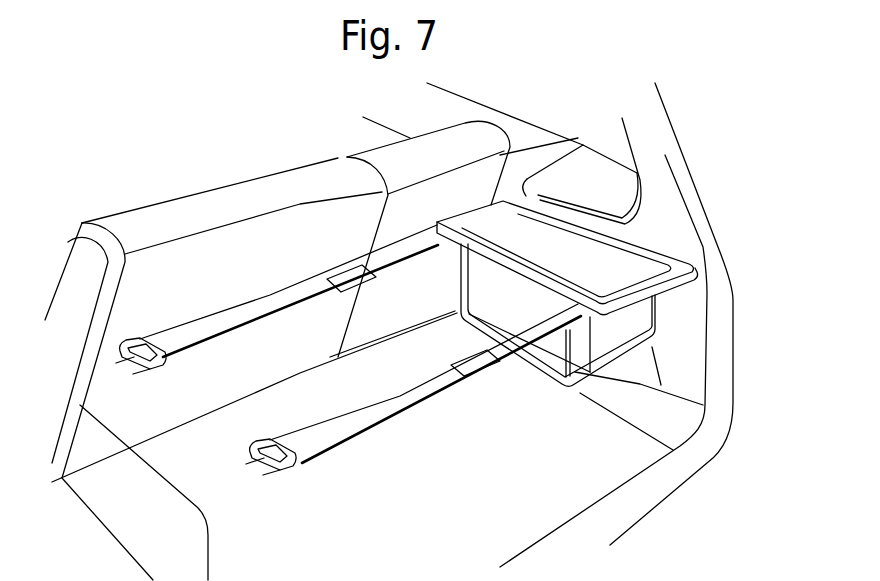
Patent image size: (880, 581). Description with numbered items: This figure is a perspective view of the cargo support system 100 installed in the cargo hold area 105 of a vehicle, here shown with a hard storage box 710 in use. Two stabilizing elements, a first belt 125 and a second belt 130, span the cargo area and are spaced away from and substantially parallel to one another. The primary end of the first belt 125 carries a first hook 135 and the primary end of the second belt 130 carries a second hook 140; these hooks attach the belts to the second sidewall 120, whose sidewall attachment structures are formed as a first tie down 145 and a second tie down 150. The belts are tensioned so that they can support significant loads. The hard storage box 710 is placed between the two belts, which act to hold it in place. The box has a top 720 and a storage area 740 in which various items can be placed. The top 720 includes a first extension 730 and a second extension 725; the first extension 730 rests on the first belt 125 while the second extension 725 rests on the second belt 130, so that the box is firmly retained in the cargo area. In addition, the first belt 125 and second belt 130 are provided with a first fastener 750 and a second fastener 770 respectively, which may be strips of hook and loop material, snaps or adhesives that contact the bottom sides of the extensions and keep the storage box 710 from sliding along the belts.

The cargo support system 100 is at (273, 266).
The cargo hold area 105 is at (452, 509).
The second sidewall 120 is at (143, 509).
The first belt 125 is at (233, 314).
The second belt 130 is at (360, 415).
The first hook 135 is at (163, 365).
The second hook 140 is at (295, 468).
The first tie down 145 is at (143, 380).
The second tie down 150 is at (268, 482).
The hard storage box 710 is at (604, 298).
The top 720 is at (608, 252).
The second extension 725 is at (660, 265).
The first extension 730 is at (604, 227).
The storage area 740 is at (613, 343).
The first fastener 750 is at (348, 278).
The second fastener 770 is at (480, 362).